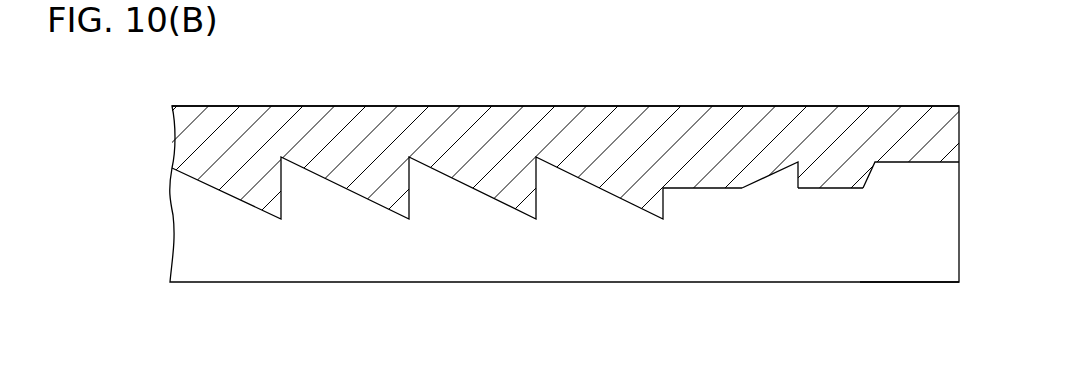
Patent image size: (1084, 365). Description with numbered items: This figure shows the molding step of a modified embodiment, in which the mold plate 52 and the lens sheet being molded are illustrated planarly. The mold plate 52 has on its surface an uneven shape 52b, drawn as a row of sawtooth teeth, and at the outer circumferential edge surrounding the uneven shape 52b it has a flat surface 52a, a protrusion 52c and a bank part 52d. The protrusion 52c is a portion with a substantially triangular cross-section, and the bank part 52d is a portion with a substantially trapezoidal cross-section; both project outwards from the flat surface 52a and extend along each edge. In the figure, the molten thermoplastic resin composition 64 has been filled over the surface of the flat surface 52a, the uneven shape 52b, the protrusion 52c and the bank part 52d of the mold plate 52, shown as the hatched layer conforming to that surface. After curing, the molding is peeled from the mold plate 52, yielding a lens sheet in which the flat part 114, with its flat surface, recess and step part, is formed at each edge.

The mold plate 52 is at (513, 306).
The flat surface 52a is at (693, 188).
The uneven shape 52b is at (353, 196).
The protrusion 52c is at (768, 188).
The bank part 52d is at (905, 162).
The molten thermoplastic resin composition 64 is at (570, 113).
The flat part 114 is at (858, 359).